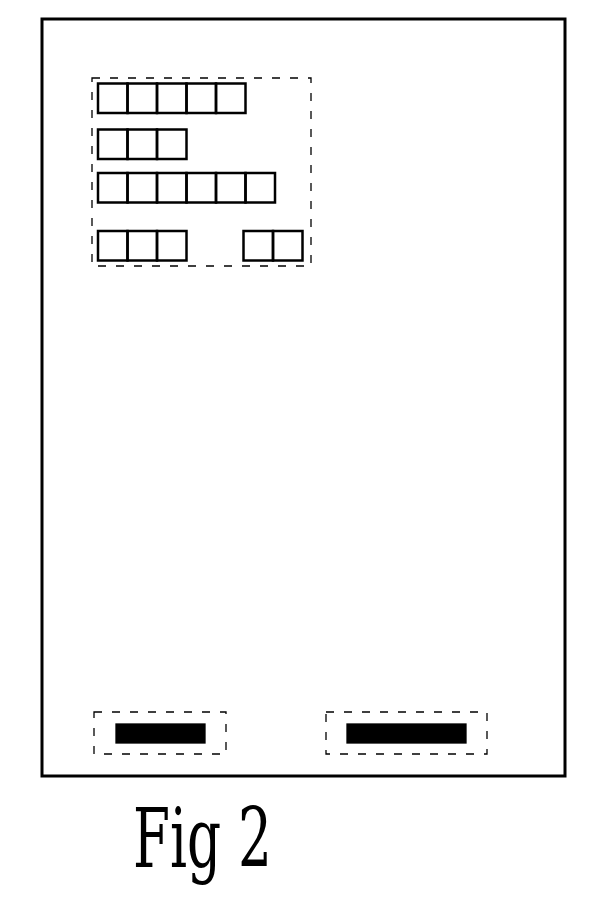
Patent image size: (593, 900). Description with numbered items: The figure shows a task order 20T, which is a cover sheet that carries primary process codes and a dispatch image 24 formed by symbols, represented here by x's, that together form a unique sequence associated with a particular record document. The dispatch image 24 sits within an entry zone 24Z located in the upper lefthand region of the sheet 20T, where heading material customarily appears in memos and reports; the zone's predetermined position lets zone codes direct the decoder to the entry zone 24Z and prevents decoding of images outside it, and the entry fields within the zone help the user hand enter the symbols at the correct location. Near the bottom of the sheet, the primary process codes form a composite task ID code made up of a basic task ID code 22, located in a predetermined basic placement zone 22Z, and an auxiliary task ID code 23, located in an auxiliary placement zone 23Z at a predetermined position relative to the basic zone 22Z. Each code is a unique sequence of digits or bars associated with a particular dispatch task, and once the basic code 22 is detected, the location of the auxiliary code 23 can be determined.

The task order 20T is at (383, 480).
The entry zone 24Z is at (313, 106).
The dispatch image 24 is at (245, 103).
The basic placement zone 22Z is at (197, 708).
The basic task ID code 22 is at (208, 728).
The auxiliary placement zone 23Z is at (435, 708).
The auxiliary task ID code 23 is at (468, 728).